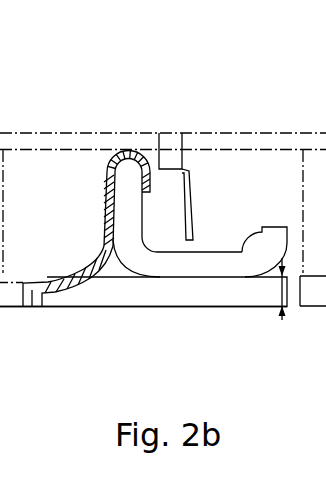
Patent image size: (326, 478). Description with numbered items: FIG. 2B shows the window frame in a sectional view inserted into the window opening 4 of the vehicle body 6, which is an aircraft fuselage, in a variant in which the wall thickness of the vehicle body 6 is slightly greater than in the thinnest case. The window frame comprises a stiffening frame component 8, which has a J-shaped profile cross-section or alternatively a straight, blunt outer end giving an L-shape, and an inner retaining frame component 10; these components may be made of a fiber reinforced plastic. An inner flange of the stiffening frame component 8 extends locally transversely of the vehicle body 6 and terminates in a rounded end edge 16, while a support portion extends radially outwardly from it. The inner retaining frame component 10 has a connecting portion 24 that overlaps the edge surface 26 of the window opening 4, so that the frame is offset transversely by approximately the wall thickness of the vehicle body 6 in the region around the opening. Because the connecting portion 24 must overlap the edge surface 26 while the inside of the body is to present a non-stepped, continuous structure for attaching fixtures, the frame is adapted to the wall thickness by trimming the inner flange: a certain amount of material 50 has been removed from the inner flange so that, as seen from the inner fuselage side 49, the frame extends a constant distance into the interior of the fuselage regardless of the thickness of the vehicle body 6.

The window opening 4 is at (28, 316).
The vehicle body 6 is at (121, 298).
The stiffening frame component 8 is at (146, 264).
The inner retaining frame component 10 is at (106, 268).
The rounded end edge 16 is at (137, 145).
The connecting portion 24 is at (163, 216).
The edge surface 26 is at (57, 275).
The inner fuselage side 49 is at (238, 266).
The removed material 50 is at (78, 140).